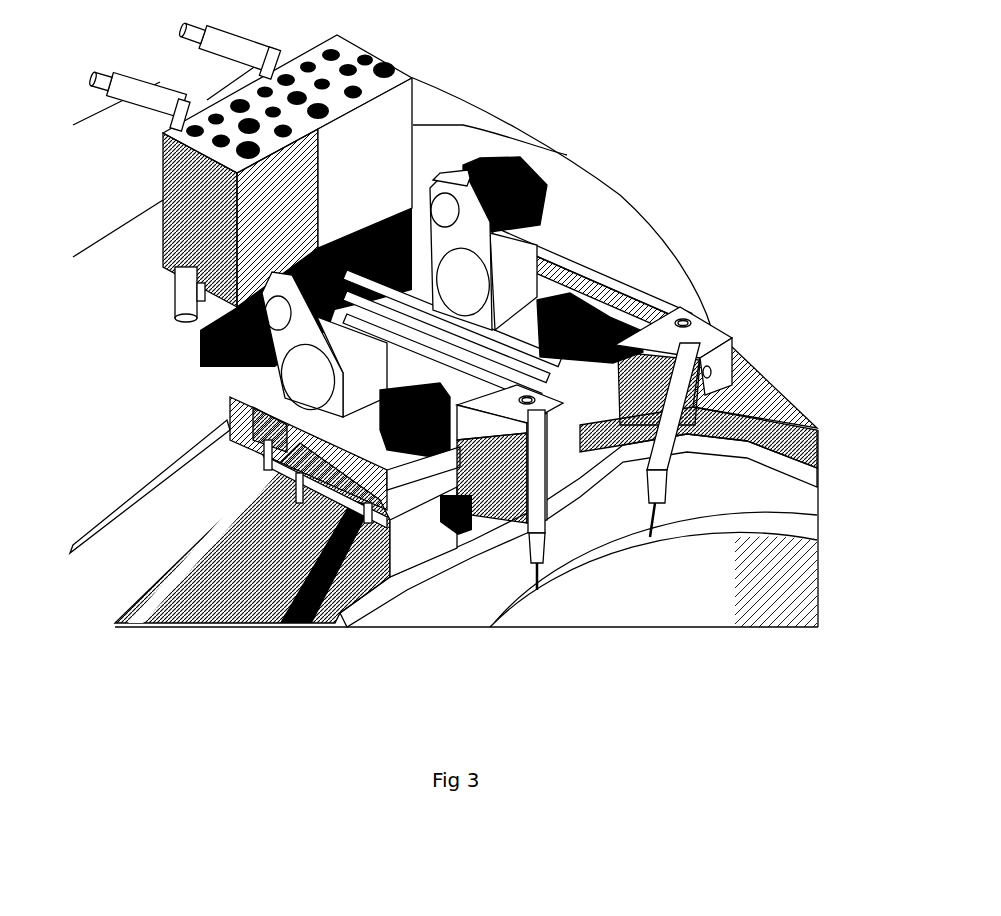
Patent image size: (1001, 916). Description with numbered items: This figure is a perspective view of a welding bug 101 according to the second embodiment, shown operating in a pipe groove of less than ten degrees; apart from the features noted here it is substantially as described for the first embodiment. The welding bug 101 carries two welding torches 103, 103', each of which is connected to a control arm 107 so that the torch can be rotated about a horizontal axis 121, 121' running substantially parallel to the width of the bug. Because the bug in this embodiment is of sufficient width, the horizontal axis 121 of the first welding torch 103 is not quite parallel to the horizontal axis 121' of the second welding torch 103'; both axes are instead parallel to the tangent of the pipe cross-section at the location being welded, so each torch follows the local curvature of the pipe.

The welding bug 101 is at (610, 204).
The control arm 107 is at (616, 275).
The horizontal axis 121 is at (206, 344).
The horizontal axis 121' is at (483, 175).
The welding torch 103 is at (499, 534).
The welding torch 103' is at (695, 495).